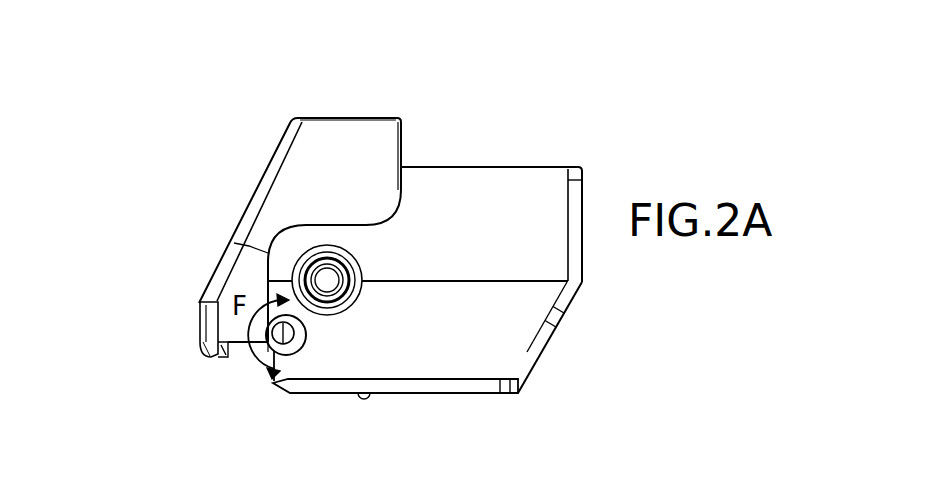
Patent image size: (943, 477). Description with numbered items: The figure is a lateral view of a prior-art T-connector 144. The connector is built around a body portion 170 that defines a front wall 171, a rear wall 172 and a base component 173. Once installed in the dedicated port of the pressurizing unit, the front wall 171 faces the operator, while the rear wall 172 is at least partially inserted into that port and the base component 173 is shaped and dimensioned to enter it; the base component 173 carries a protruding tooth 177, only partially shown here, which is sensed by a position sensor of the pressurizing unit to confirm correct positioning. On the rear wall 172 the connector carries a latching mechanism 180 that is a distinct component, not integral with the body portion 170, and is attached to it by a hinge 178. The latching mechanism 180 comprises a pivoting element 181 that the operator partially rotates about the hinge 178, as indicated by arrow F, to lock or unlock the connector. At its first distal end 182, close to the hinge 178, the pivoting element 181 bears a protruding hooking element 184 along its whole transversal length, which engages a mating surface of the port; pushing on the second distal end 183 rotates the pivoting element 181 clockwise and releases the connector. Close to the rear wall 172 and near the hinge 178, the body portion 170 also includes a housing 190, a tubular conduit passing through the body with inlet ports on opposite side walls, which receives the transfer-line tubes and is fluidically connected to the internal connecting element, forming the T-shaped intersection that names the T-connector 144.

The T-connector 144 is at (662, 88).
The body portion 170 is at (510, 207).
The front wall 171 is at (538, 355).
The rear wall 172 is at (274, 379).
The base component 173 is at (476, 391).
The protruding tooth 177 is at (362, 397).
The hinge 178 is at (293, 336).
The latching mechanism 180 is at (208, 178).
The pivoting element 181 is at (327, 167).
The first distal end 182 is at (203, 322).
The second distal end 183 is at (388, 137).
The hooking element 184 is at (227, 362).
The housing 190 is at (357, 265).